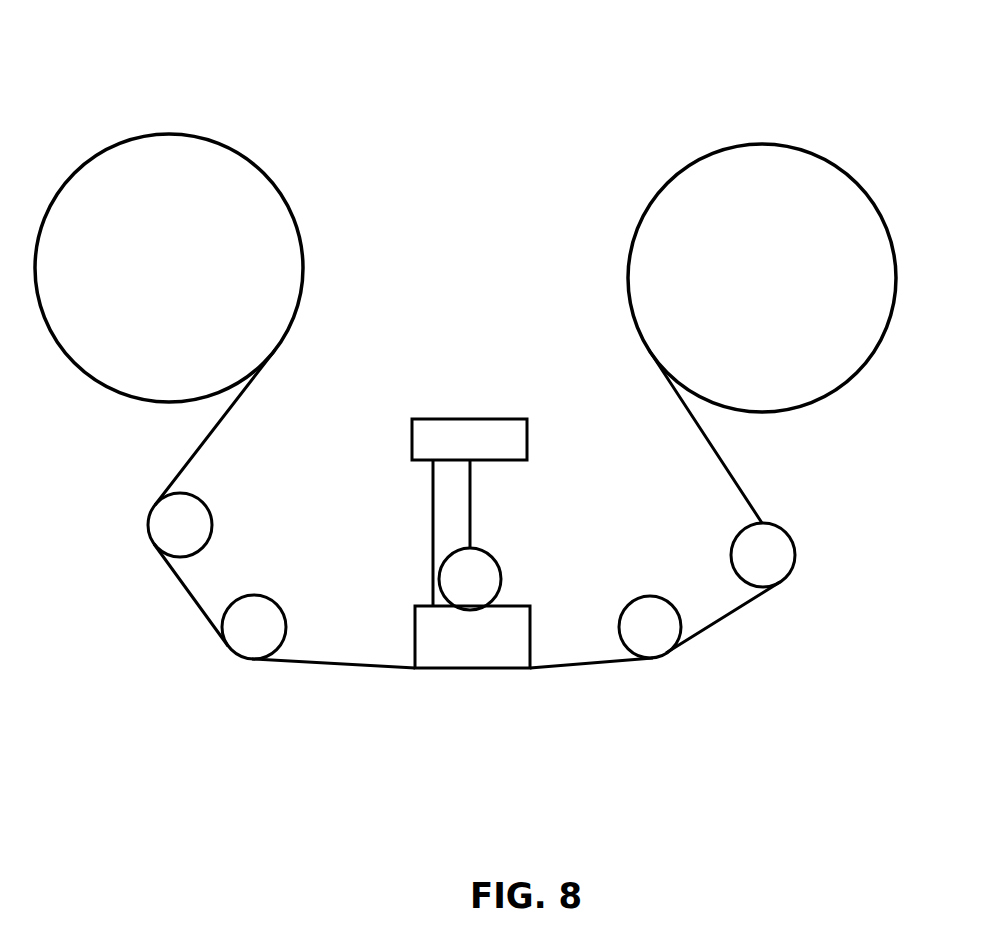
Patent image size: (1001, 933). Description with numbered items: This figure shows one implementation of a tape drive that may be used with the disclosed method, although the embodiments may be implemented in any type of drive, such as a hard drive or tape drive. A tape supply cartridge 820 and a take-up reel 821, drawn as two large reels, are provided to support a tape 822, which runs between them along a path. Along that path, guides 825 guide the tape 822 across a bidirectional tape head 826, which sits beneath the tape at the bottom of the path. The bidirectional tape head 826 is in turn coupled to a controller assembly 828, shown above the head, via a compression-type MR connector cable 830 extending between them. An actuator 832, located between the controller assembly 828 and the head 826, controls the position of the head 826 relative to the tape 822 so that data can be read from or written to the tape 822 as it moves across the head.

The tape supply cartridge 820 is at (170, 135).
The take-up reel 821 is at (763, 145).
The tape 822 is at (333, 667).
The guides 825 is at (213, 517).
The bidirectional tape head 826 is at (532, 637).
The controller assembly 828 is at (468, 418).
The compression-type MR connector cable 830 is at (433, 574).
The actuator 832 is at (495, 552).